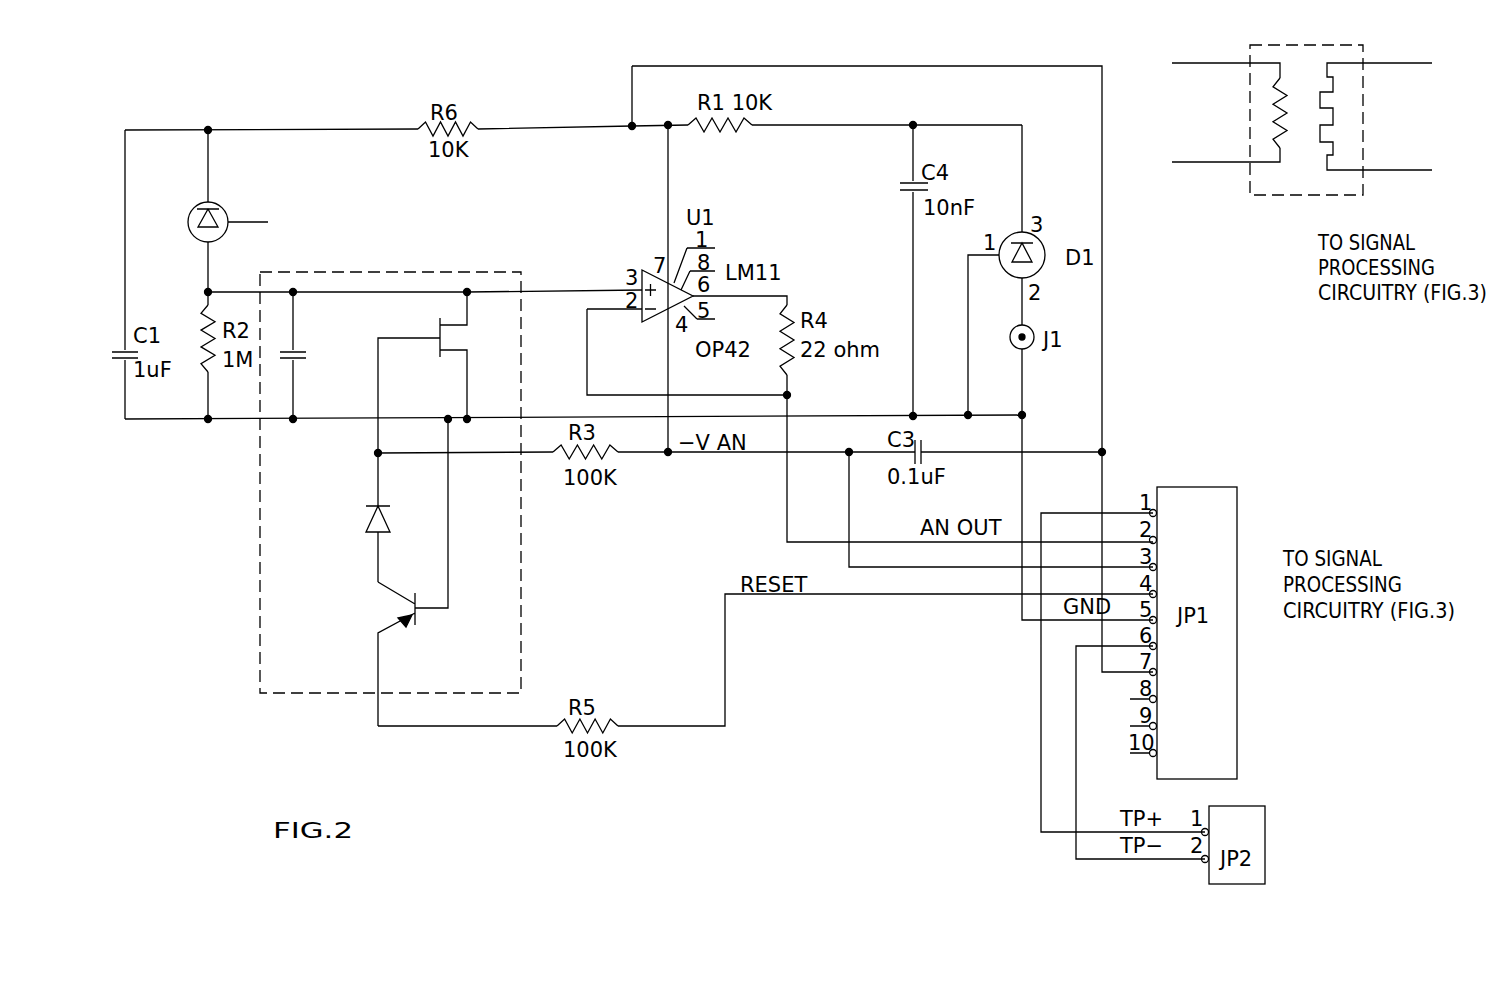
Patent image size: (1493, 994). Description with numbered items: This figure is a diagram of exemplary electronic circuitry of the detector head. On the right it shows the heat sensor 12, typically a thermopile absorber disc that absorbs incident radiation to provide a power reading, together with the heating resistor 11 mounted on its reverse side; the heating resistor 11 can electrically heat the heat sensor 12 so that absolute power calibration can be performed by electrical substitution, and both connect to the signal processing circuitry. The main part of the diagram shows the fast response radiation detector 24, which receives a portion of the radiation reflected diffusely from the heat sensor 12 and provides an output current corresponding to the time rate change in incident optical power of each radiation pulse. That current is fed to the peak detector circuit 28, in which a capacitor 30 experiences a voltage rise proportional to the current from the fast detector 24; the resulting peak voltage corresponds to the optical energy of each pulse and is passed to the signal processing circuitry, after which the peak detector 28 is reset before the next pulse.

The fast response radiation detector 24 is at (193, 209).
The peak detector circuit 28 is at (340, 499).
The capacitor 30 is at (290, 368).
The heating resistor 11 is at (1278, 117).
The heat sensor 12 is at (1335, 118).